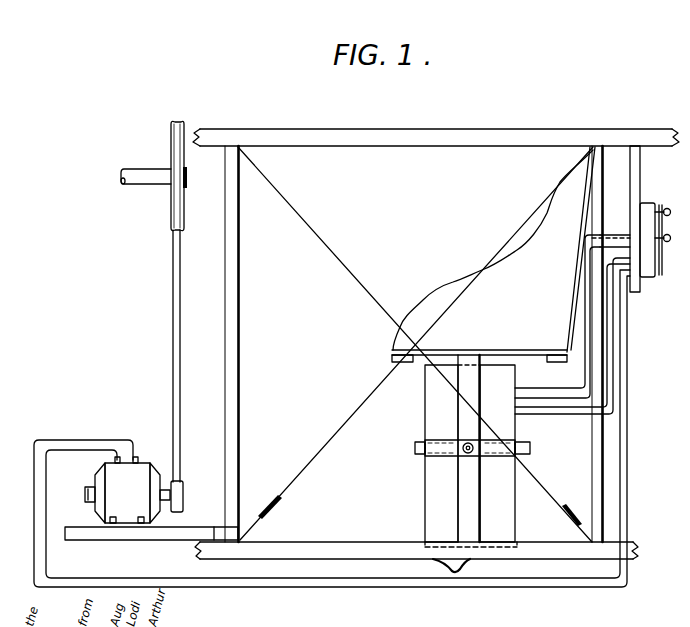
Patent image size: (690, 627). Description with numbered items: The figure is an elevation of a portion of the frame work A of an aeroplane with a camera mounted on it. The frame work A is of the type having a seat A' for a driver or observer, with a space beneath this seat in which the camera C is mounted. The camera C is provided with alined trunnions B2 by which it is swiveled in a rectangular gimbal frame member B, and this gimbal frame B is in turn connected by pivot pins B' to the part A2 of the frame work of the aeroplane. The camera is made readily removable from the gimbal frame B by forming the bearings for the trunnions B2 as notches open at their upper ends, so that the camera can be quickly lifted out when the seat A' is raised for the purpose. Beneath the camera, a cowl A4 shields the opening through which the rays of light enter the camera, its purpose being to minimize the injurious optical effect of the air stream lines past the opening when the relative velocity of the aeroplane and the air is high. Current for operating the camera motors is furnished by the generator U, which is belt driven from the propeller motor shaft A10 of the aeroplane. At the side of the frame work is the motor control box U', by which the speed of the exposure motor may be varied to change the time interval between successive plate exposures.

The frame work A is at (436, 344).
The propeller motor shaft A10 is at (141, 177).
The seat A' is at (493, 254).
The part of the frame work A2 is at (460, 407).
The cowl A4 is at (447, 568).
The gimbal frame member B is at (470, 437).
The pivot pins B' is at (450, 469).
The trunnions B2 is at (415, 447).
The camera C is at (497, 453).
The generator U is at (151, 498).
The motor control box U' is at (353, 366).